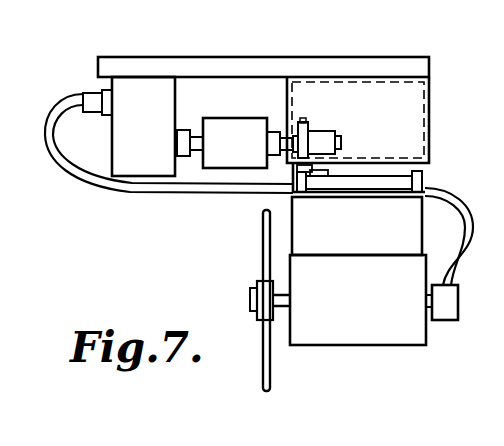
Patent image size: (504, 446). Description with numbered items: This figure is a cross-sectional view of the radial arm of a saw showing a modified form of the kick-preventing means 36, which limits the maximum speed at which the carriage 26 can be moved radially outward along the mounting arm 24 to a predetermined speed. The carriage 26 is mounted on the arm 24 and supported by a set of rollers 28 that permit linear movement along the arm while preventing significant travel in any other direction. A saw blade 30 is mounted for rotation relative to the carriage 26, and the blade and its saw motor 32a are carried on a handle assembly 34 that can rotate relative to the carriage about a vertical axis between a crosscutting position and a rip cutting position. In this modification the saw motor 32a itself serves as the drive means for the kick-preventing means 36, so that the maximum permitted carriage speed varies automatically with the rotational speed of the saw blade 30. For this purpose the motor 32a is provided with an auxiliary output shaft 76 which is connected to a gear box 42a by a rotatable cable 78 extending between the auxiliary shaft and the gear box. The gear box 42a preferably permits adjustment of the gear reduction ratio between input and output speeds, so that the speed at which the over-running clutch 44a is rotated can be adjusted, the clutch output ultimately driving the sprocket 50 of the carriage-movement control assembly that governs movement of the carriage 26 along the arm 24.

The kick-preventing means 36 is at (283, 57).
The gear box 42a is at (133, 93).
The second cylinder 44a is at (235, 102).
The mounting arm 24 is at (432, 100).
The sprocket 50 is at (303, 131).
The carriage 26 is at (358, 184).
The rollers 28 is at (422, 172).
The rotatable cable 78 is at (460, 199).
The handle assembly 34 is at (422, 241).
The saw motor 32a is at (352, 332).
The saw blade 30 is at (263, 258).
The auxiliary output shaft 76 is at (440, 322).